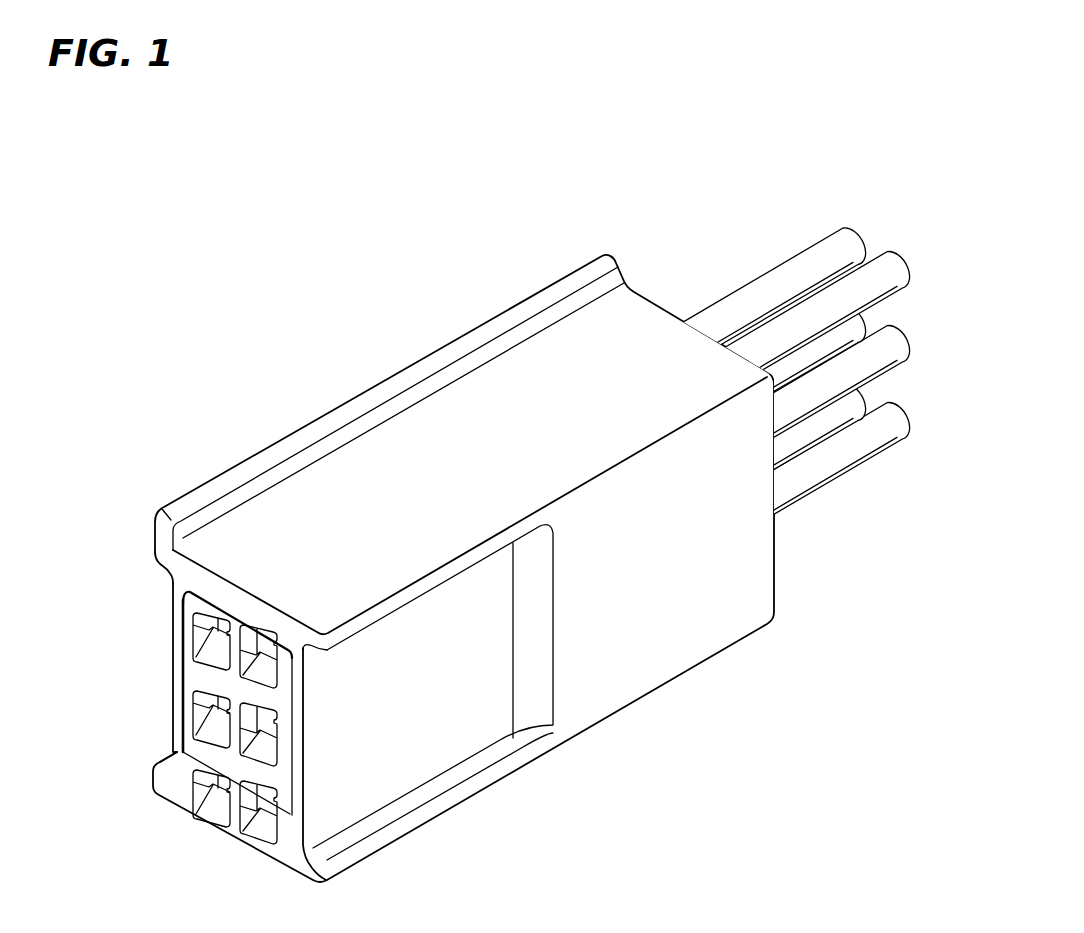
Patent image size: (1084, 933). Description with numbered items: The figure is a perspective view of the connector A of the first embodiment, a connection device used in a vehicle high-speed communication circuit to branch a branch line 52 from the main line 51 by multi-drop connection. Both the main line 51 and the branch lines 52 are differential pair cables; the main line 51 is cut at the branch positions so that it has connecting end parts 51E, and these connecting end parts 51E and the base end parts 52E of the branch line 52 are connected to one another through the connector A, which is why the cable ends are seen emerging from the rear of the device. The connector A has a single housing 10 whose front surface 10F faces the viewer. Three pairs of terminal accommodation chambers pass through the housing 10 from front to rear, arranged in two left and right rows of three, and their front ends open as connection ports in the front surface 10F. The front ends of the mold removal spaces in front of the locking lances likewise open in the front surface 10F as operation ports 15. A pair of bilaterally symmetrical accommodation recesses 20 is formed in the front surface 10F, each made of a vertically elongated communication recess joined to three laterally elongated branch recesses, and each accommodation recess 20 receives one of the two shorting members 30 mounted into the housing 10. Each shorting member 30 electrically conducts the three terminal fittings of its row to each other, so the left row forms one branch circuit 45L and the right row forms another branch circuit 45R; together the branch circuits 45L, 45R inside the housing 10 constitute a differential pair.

The connector A is at (236, 231).
The housing 10 is at (440, 430).
The front surface 10F is at (188, 577).
The operation ports 15 is at (208, 653).
The accommodation recesses 20 is at (180, 623).
The shorting members 30 is at (190, 748).
The branch circuit 45L is at (151, 657).
The branch circuit 45R is at (312, 684).
The main line 51 is at (834, 194).
The connecting end parts 51E is at (788, 331).
The branch lines 52 is at (919, 304).
The base end parts 52E is at (823, 393).